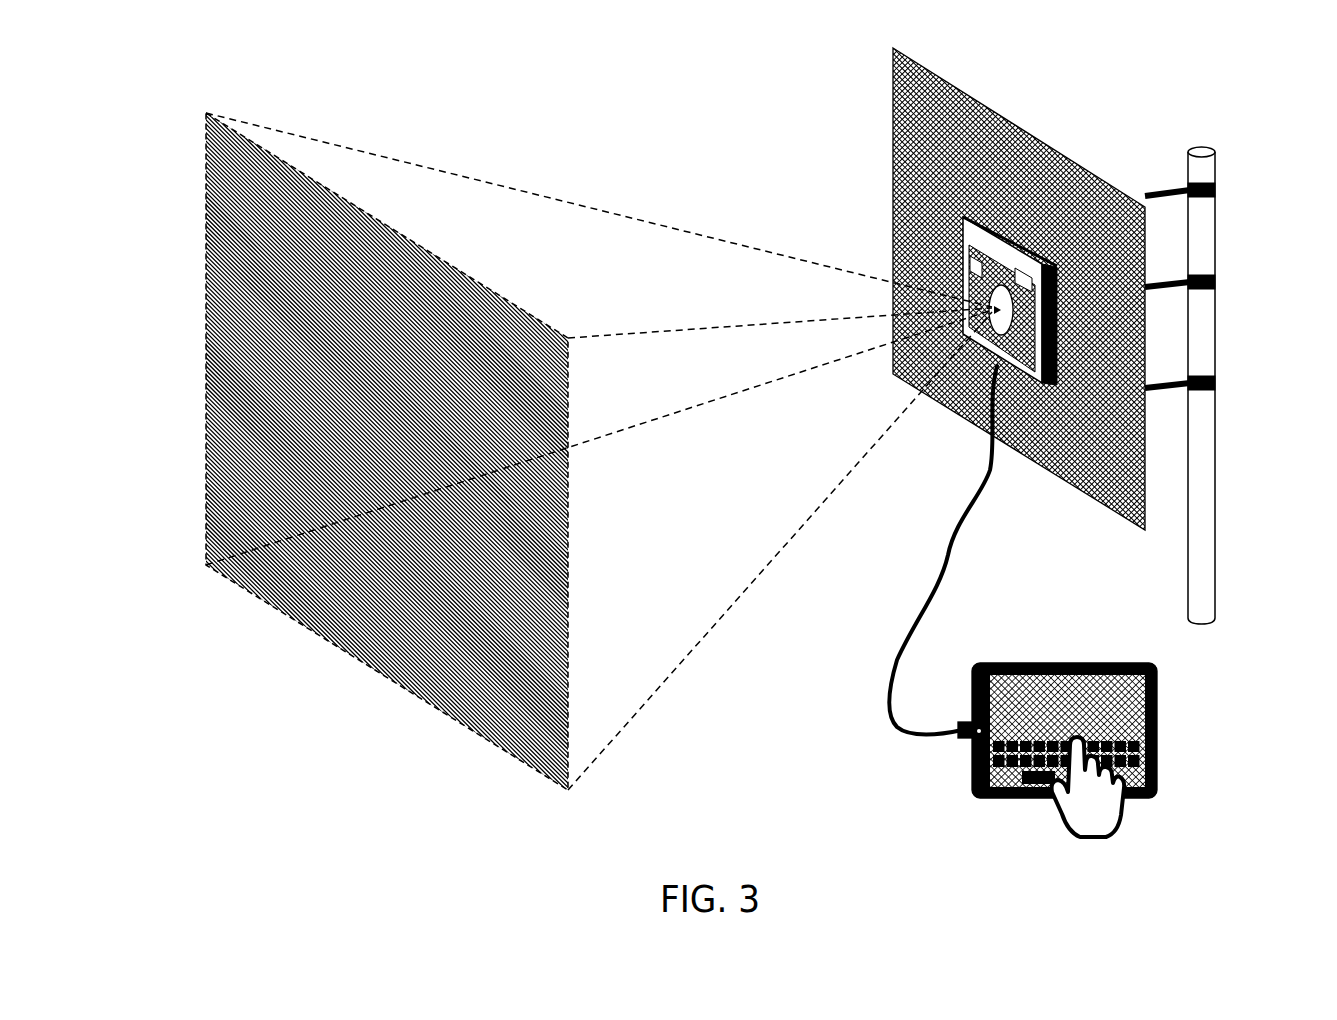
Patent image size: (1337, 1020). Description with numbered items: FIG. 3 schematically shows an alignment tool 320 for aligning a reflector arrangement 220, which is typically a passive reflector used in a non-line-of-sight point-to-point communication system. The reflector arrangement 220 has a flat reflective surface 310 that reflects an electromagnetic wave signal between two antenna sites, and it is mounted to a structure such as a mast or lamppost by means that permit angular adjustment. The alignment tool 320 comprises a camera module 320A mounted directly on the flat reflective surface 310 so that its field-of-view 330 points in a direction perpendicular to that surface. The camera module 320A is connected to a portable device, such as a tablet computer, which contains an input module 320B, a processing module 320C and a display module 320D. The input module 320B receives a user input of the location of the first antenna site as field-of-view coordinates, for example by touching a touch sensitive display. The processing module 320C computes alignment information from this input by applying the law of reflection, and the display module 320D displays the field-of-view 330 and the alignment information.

The reflector arrangement 220 is at (1161, 109).
The flat reflective surface 310 is at (982, 98).
The alignment tool 320 is at (977, 362).
The camera module 320A is at (960, 261).
The input module 320B is at (1012, 779).
The processing module 320C is at (1160, 694).
The display module 320D is at (1043, 689).
The field-of-view 330 is at (333, 645).